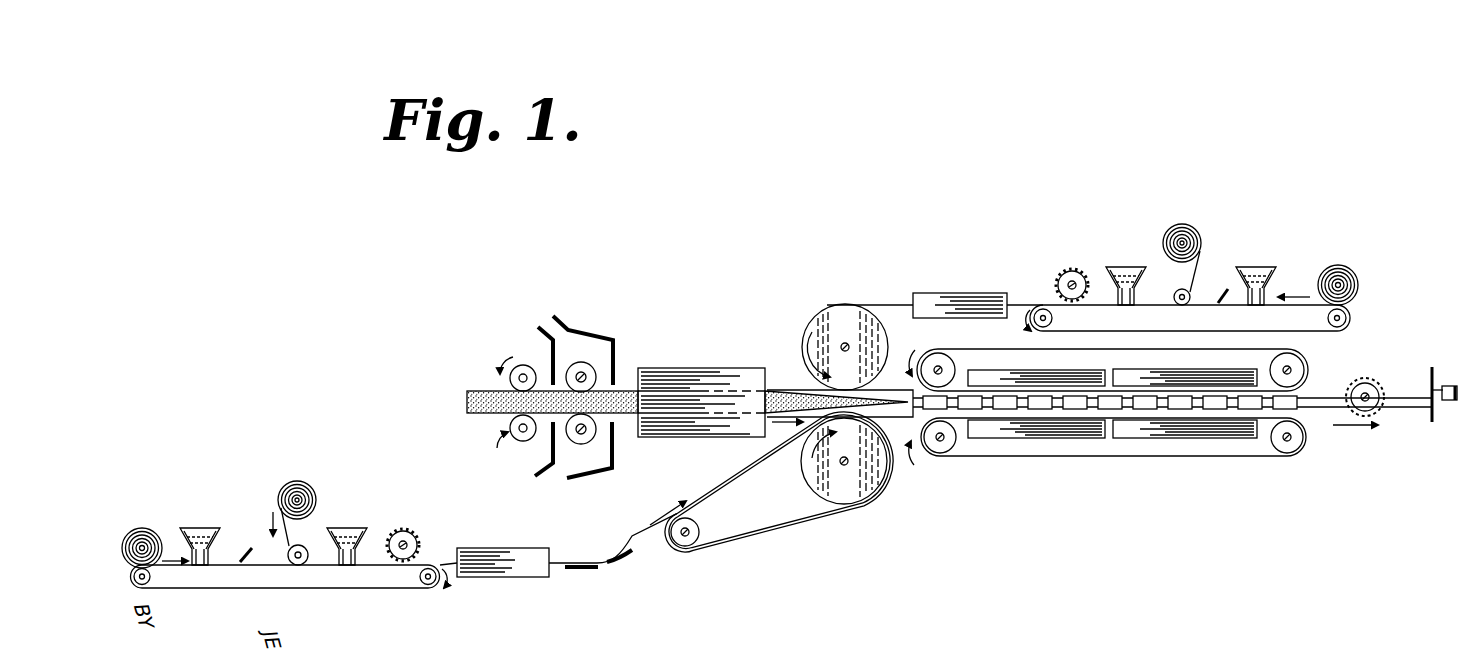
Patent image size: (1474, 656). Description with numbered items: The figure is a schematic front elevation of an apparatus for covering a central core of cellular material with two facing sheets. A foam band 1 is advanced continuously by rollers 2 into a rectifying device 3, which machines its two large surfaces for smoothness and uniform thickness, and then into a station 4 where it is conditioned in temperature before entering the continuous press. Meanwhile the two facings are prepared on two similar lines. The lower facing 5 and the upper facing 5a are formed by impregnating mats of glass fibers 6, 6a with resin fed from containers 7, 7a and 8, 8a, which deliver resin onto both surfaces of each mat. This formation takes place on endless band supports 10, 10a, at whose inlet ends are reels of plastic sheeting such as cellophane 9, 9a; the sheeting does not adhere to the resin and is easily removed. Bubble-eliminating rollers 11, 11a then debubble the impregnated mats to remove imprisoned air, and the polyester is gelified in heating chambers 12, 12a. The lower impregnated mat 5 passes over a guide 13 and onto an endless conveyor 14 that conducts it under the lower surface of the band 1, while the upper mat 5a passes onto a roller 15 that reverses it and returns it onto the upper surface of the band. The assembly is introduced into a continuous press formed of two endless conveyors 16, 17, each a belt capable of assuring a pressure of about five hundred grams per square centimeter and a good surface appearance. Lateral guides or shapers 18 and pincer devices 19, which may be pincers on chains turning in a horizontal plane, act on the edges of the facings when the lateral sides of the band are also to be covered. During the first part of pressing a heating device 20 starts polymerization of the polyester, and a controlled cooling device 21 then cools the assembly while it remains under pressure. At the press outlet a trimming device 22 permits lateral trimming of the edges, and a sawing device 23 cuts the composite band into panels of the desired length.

The foam band 1 is at (467, 391).
The rollers 2 is at (525, 364).
The rectifying device 3 is at (583, 363).
The station 4 is at (680, 378).
The lower impregnated mat 5 is at (637, 538).
The upper impregnated mat 5a is at (880, 304).
The mat of glass fibers 6 is at (277, 504).
The mat of glass fibers 6a is at (1186, 236).
The container 7 is at (188, 528).
The container 7a is at (1248, 266).
The container 8 is at (345, 527).
The container 8a is at (1118, 266).
The reel of plastic sheeting 9 is at (126, 532).
The reel of plastic sheeting 9a is at (1340, 268).
The endless band support 10 is at (325, 589).
The endless band support 10a is at (1320, 331).
The bubble-eliminating roller 11 is at (405, 530).
The bubble-eliminating roller 11a is at (1068, 268).
The heating chamber 12 is at (503, 567).
The heating chamber 12a is at (958, 302).
The guide 13 is at (601, 568).
The endless conveyor 14 is at (758, 533).
The roller 15 is at (835, 318).
The endless conveyor 16 is at (969, 459).
The endless conveyor 17 is at (993, 347).
The lateral guides or shapers 18 is at (895, 410).
The pincer devices 19 is at (1140, 408).
The heating device 20 is at (1048, 431).
The controlled cooling device 21 is at (1193, 429).
The trimming device 22 is at (1375, 405).
The sawing device 23 is at (1448, 386).